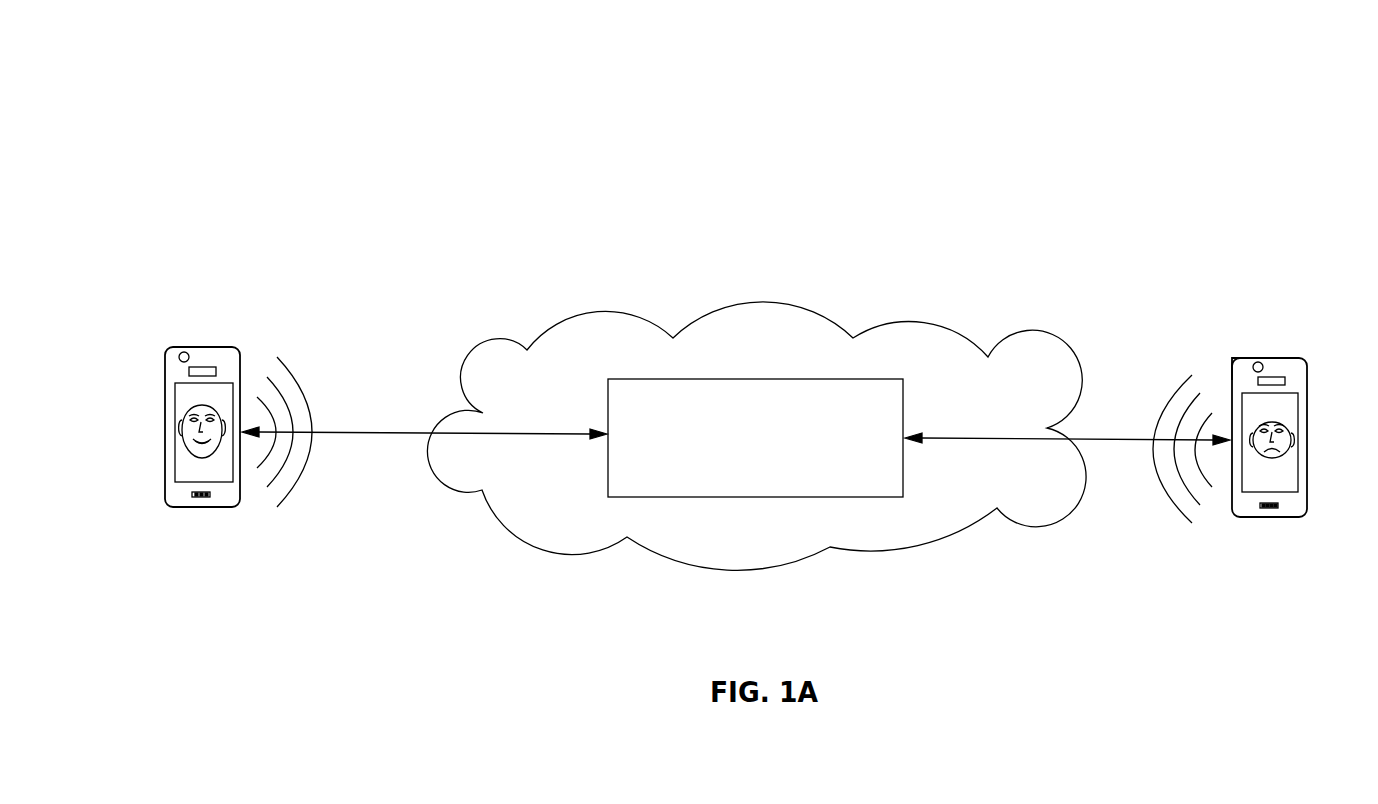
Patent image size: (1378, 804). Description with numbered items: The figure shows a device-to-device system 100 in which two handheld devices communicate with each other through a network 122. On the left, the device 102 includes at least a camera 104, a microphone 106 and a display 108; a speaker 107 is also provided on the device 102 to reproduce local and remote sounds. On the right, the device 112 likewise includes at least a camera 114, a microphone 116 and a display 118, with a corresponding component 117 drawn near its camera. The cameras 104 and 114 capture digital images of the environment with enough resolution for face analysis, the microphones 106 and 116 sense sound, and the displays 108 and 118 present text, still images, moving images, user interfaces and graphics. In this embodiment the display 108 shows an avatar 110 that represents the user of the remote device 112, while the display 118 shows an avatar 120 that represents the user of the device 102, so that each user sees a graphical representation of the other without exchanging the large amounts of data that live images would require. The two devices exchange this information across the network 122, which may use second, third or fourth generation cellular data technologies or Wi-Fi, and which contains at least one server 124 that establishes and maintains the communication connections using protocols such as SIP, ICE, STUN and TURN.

The device-to-device system 100 is at (235, 82).
The device 102 is at (227, 348).
The camera 104 is at (181, 351).
The microphone 106 is at (208, 503).
The speaker 107 is at (205, 367).
The display 108 is at (175, 408).
The avatar 110 is at (193, 447).
The device 112 is at (1277, 358).
The camera 114 is at (1232, 360).
The microphone 116 is at (1263, 507).
The camera 117 is at (1258, 362).
The display 118 is at (1300, 407).
The avatar 120 is at (1282, 458).
The network 122 is at (557, 317).
The server 124 is at (742, 472).